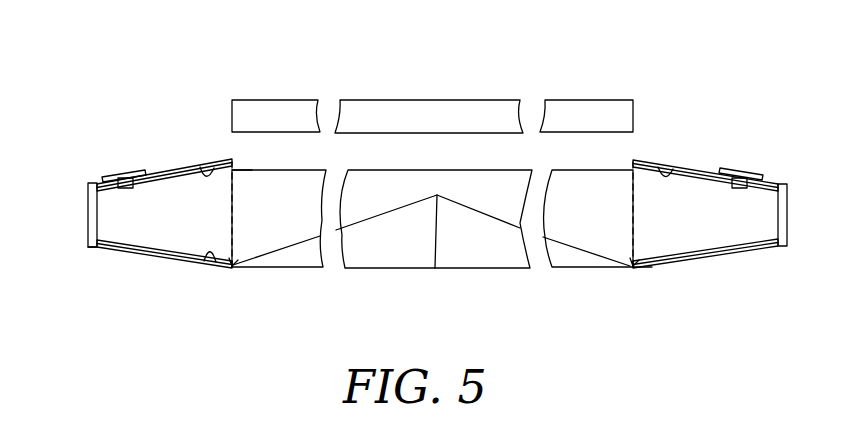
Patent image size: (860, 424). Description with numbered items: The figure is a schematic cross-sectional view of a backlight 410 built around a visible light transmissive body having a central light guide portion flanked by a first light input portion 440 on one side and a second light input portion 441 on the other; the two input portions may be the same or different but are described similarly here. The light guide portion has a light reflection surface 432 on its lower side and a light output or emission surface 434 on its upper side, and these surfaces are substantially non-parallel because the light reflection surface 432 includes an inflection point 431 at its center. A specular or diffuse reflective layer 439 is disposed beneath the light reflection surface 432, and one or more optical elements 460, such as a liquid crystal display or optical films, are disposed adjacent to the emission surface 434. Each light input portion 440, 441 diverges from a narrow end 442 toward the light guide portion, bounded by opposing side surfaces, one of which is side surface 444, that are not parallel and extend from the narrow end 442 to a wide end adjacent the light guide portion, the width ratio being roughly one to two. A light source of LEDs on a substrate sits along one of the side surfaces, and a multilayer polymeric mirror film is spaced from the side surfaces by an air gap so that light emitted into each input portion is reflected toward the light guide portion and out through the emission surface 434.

The backlight 410 is at (427, 55).
The inflection point 431 is at (435, 268).
The light reflection surface 432 is at (572, 240).
The emission surface 434 is at (240, 267).
The reflective layer 439 is at (370, 268).
The first light input portion 440 is at (133, 114).
The second light input portion 441 is at (718, 110).
The narrow end 442 is at (88, 212).
The side surface 444 is at (212, 265).
The optical element 460 is at (275, 110).